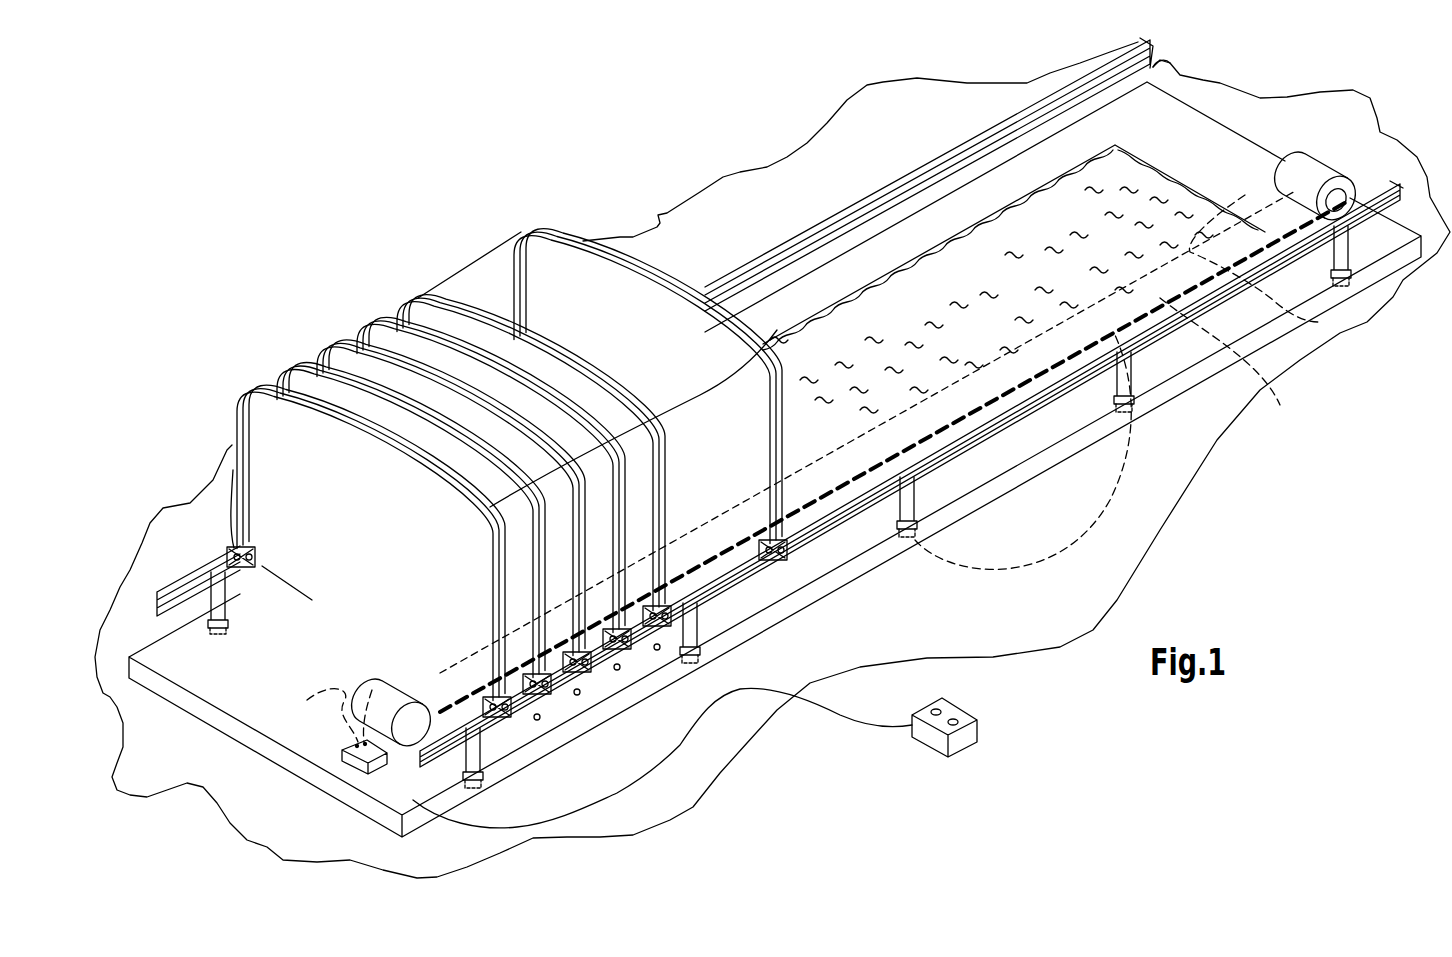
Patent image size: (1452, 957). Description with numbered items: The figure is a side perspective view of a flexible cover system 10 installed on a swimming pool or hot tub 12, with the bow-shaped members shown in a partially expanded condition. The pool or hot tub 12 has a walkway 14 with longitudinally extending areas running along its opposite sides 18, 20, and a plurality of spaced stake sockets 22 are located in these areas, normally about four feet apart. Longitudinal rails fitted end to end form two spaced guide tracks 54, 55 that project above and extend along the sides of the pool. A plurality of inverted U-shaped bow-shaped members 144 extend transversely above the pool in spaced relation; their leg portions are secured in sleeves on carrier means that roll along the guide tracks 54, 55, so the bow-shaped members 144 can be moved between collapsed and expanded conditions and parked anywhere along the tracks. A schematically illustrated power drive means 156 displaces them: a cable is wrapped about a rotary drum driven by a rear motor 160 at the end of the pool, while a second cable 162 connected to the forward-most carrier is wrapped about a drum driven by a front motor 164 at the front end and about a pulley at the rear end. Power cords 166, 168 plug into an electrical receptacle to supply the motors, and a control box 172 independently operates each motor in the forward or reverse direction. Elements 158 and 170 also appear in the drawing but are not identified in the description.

The flexible cover system 10 is at (348, 290).
The swimming pool or hot tub 12 is at (1205, 135).
The walkway 14 is at (932, 237).
The opposite side of the pool or hot tub 18 is at (1393, 240).
The opposite side of the pool or hot tub 20 is at (1180, 75).
The stake sockets 22 is at (1023, 454).
The guide track 54 is at (1381, 183).
The guide track 55 is at (808, 220).
The bow-shaped members 144 is at (490, 327).
The power drive means 156 is at (1317, 143).
The cable 158 is at (895, 456).
The rear motor 160 is at (1328, 168).
The second cable 162 is at (485, 766).
The front motor 164 is at (380, 690).
The power cord 166 is at (1318, 322).
The power cord 168 is at (318, 715).
The motor 170 is at (360, 762).
The control box 172 is at (945, 742).